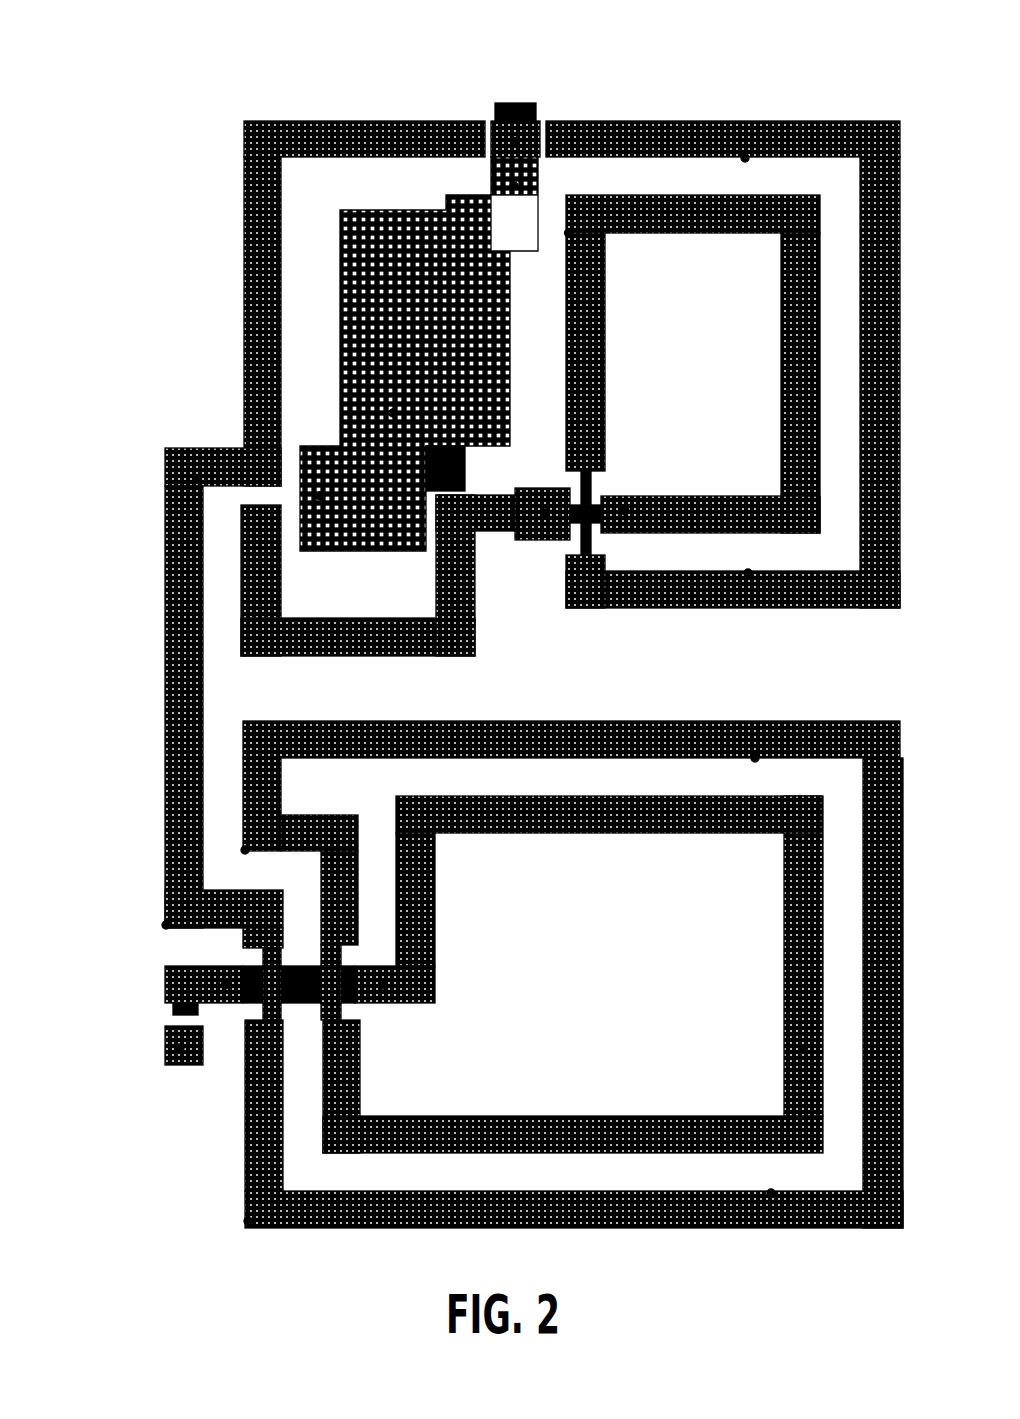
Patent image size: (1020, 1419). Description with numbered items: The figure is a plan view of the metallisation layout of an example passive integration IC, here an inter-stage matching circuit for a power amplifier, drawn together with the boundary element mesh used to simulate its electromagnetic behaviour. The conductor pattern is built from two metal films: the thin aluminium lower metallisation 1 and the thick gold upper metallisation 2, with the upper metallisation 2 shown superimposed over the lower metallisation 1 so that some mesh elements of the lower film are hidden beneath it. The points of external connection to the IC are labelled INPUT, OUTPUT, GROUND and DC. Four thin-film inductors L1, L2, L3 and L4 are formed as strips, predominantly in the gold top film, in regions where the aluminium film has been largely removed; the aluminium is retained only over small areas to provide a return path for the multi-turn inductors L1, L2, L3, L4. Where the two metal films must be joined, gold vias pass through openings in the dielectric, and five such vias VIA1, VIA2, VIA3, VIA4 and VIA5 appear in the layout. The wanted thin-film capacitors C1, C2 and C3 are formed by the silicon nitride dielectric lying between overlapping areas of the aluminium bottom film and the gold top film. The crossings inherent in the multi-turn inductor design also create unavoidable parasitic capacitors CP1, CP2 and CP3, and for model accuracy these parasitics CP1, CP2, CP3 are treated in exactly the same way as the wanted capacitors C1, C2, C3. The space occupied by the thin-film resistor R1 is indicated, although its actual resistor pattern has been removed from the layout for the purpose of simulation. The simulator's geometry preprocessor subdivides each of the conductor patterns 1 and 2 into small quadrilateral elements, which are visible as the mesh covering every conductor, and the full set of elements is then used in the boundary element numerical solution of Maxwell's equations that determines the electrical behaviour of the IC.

The lower metallisation 1 is at (500, 93).
The upper metallisation 2 is at (654, 113).
The thin-film capacitor C1 is at (570, 113).
The thin-film inductor L3 is at (539, 331).
The gold via VIA1 is at (530, 178).
The thin-film inductor L2 is at (773, 312).
The ground connection point GROUND is at (292, 442).
The gold via VIA2 is at (332, 403).
The output connection point OUTPUT is at (157, 466).
The input connection point INPUT is at (233, 515).
The thin-film capacitor C3 is at (457, 460).
The parasitic capacitor CP3 is at (585, 498).
The thin-film inductor L1 is at (317, 610).
The thin-film capacitor C2 is at (532, 532).
The gold via VIA3 is at (613, 525).
The thin-film inductor L4 is at (775, 930).
The gold via VIA5 is at (157, 975).
The gold via VIA4 is at (427, 970).
The thin-film resistor R1 is at (165, 1001).
The DC connection point DC is at (160, 1038).
The parasitic capacitor CP1 is at (240, 995).
The parasitic capacitor CP2 is at (358, 995).